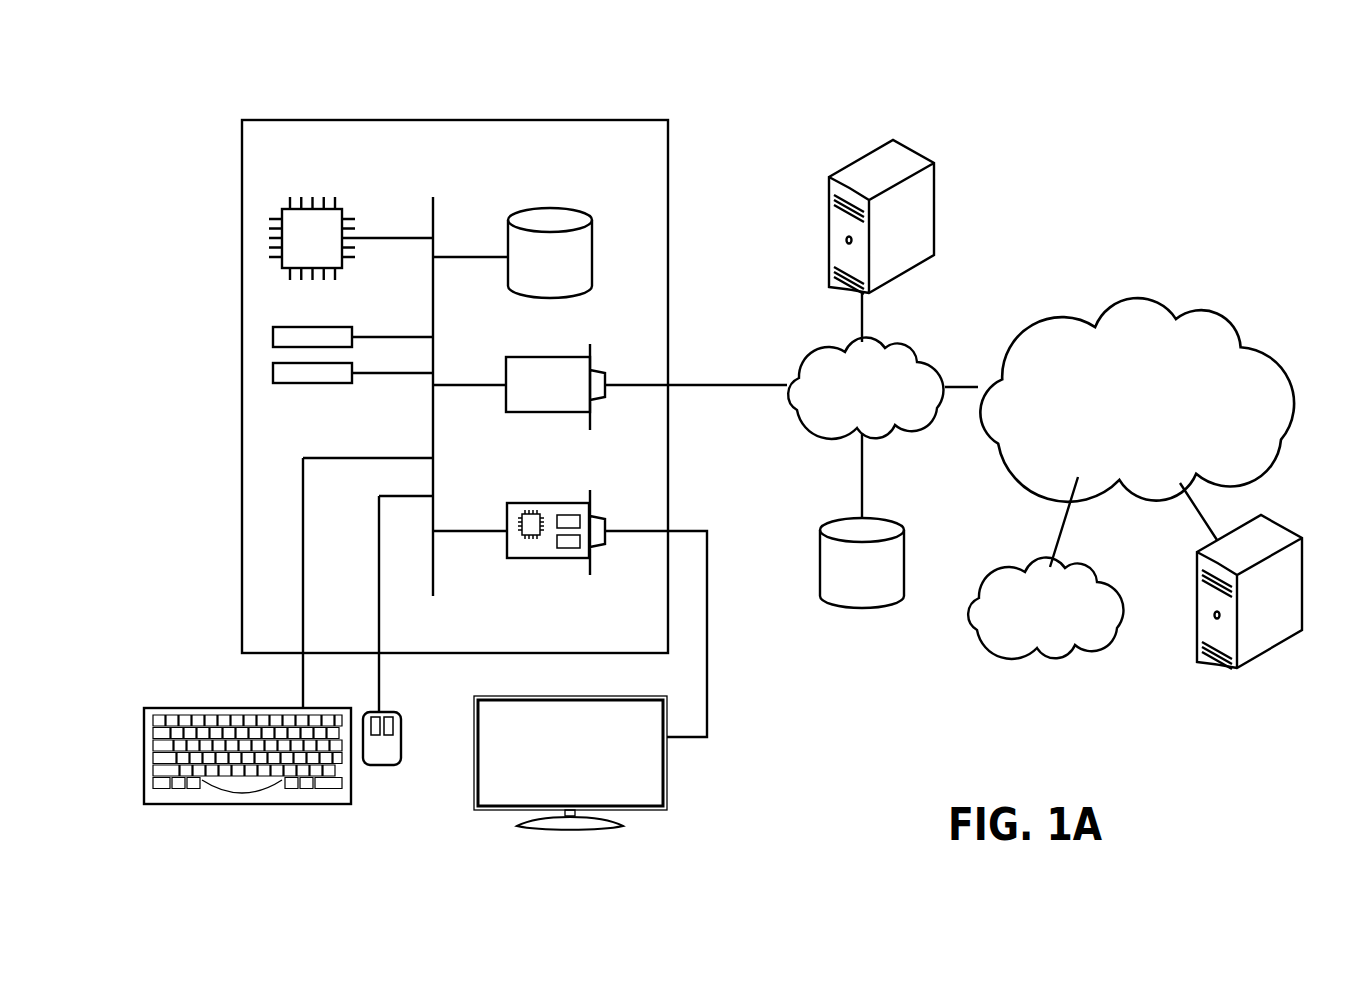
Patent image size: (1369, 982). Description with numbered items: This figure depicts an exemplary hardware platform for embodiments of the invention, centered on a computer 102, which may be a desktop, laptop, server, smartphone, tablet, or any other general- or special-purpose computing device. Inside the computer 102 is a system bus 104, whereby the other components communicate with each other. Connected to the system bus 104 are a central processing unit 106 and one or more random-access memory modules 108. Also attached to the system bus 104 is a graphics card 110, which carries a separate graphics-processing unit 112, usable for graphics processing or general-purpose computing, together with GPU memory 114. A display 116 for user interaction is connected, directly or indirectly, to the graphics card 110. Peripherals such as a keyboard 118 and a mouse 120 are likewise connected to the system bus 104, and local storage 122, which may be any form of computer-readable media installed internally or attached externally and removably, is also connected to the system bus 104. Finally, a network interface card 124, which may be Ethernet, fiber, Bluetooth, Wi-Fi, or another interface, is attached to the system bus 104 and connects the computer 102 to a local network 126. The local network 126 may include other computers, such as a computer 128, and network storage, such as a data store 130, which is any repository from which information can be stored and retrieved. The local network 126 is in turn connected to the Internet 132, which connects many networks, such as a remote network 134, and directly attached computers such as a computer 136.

The computer 102 is at (621, 120).
The system bus 104 is at (435, 210).
The central processing unit 106 is at (337, 208).
The random-access memory modules 108 is at (352, 368).
The graphics card 110 is at (507, 515).
The graphics-processing unit 112 is at (531, 530).
The GPU memory 114 is at (567, 548).
The display 116 is at (667, 790).
The keyboard 118 is at (250, 804).
The mouse 120 is at (378, 765).
The local storage 122 is at (592, 240).
The network interface card 124 is at (506, 368).
The local network 126 is at (918, 347).
The computer 128 is at (918, 150).
The data store 130 is at (895, 519).
The Internet 132 is at (1182, 300).
The remote network 134 is at (1103, 562).
The computer 136 is at (1280, 515).